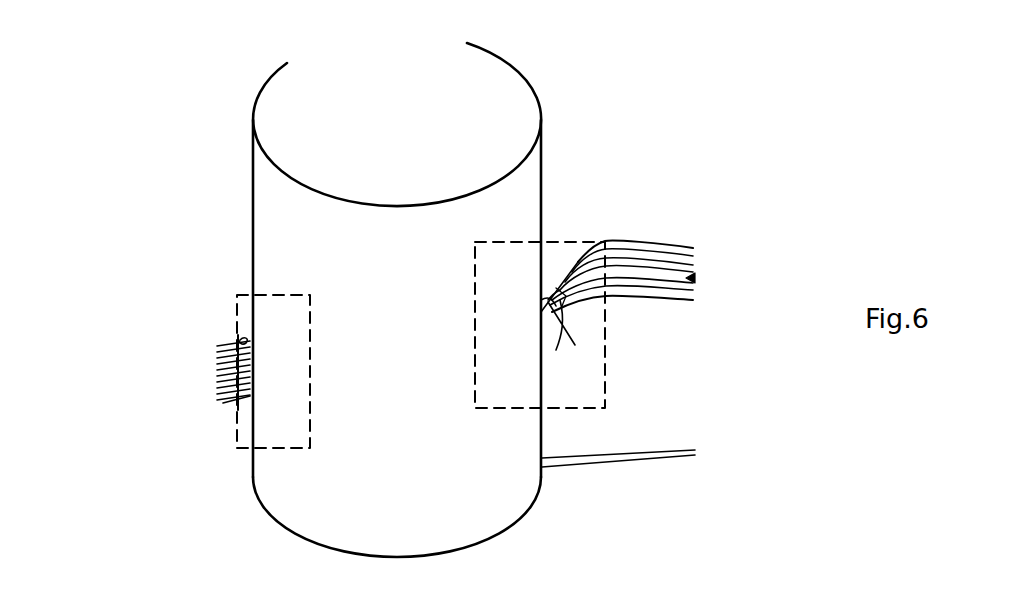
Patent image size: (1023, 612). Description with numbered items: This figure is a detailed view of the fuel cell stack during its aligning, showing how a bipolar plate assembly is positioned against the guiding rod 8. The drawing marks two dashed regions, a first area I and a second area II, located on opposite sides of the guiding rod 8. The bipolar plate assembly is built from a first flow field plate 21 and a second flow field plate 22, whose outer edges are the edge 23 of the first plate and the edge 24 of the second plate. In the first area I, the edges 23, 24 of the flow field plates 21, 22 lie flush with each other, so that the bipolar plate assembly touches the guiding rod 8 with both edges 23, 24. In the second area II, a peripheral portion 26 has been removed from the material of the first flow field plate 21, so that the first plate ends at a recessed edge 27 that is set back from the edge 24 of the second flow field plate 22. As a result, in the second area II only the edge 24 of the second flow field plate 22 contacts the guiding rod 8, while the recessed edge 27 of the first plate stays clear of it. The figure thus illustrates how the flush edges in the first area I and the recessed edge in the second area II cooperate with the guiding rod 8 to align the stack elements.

The guiding rod 8 is at (497, 80).
The first flow field plate 21 is at (698, 262).
The second flow field plate 22 is at (692, 303).
The edge of the first flow field plate 23 is at (246, 337).
The edge of the second flow field plate 24 is at (223, 403).
The peripheral portion 26 is at (694, 278).
The recessed edge 27 is at (557, 270).
The first area I is at (238, 295).
The second area II is at (568, 242).